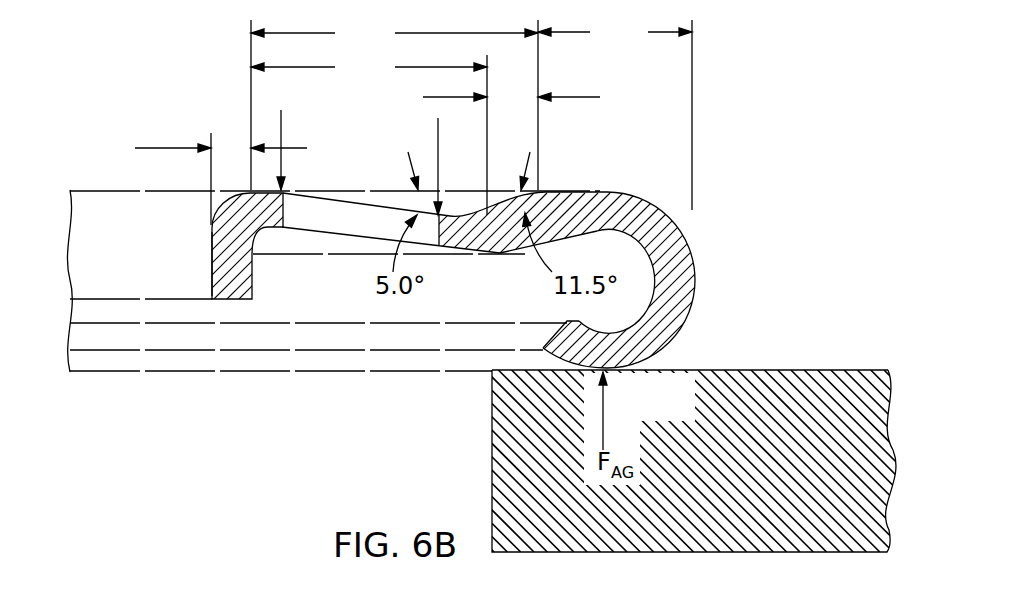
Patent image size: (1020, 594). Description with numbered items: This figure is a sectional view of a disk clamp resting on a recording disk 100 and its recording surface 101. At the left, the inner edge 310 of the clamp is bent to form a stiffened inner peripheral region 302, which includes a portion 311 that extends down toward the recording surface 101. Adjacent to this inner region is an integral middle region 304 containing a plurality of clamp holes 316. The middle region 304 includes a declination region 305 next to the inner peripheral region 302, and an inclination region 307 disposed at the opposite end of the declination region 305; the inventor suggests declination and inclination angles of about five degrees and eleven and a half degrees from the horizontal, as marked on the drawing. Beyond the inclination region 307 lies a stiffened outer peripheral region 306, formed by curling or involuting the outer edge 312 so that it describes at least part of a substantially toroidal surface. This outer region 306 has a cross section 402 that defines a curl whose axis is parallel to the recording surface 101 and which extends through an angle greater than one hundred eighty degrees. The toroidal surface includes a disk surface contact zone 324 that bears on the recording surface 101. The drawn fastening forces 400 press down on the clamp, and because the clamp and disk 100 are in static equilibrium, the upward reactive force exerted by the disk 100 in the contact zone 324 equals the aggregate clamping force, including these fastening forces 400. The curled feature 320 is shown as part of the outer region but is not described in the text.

The disk 100 is at (863, 377).
The recording surface 101 is at (817, 368).
The stiffened inner peripheral region 302 is at (196, 151).
The middle region 304 is at (394, 34).
The declination region 305 is at (369, 68).
The stiffened outer peripheral region 306 is at (615, 33).
The inclination region 307 is at (537, 98).
The inner edge 310 is at (237, 300).
The portion 311 is at (212, 265).
The outer edge 312 is at (543, 340).
The clamp holes 316 is at (318, 237).
The hook ring 320 is at (692, 318).
The disk surface contact zone 324 is at (615, 372).
The fastening forces 400 is at (437, 118).
The cross section 402 is at (693, 262).